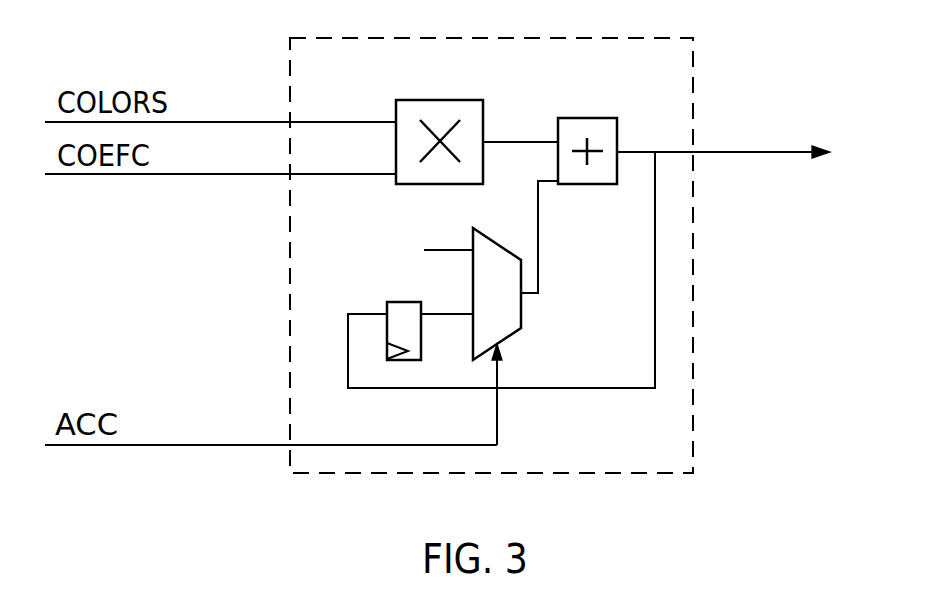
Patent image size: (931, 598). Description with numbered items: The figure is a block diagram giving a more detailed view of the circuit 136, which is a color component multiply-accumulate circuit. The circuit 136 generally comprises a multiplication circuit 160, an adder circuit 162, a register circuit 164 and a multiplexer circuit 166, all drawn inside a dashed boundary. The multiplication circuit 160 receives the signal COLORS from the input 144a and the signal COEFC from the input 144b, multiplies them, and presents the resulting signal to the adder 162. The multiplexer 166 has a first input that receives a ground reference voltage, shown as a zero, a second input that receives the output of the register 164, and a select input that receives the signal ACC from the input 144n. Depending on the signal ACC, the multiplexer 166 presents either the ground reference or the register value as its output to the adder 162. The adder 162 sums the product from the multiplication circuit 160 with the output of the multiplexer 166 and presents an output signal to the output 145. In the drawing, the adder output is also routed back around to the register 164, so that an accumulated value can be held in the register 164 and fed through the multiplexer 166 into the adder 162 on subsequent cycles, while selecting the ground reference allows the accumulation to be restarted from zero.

The circuit 136 is at (490, 38).
The input 144a is at (290, 122).
The input 144b is at (290, 174).
The input 144n is at (290, 445).
The output 145 is at (697, 152).
The multiplication circuit 160 is at (455, 72).
The adder circuit 162 is at (585, 118).
The register circuit 164 is at (404, 302).
The multiplexer circuit 166 is at (493, 232).